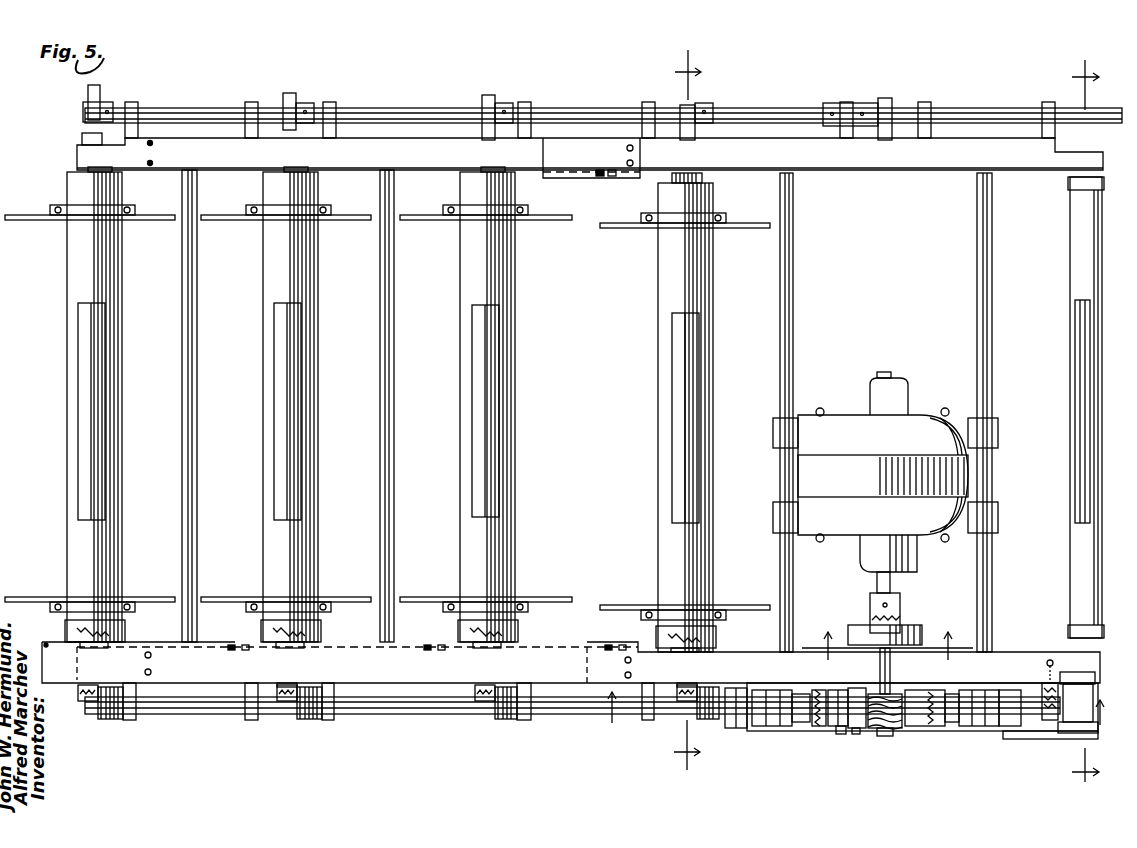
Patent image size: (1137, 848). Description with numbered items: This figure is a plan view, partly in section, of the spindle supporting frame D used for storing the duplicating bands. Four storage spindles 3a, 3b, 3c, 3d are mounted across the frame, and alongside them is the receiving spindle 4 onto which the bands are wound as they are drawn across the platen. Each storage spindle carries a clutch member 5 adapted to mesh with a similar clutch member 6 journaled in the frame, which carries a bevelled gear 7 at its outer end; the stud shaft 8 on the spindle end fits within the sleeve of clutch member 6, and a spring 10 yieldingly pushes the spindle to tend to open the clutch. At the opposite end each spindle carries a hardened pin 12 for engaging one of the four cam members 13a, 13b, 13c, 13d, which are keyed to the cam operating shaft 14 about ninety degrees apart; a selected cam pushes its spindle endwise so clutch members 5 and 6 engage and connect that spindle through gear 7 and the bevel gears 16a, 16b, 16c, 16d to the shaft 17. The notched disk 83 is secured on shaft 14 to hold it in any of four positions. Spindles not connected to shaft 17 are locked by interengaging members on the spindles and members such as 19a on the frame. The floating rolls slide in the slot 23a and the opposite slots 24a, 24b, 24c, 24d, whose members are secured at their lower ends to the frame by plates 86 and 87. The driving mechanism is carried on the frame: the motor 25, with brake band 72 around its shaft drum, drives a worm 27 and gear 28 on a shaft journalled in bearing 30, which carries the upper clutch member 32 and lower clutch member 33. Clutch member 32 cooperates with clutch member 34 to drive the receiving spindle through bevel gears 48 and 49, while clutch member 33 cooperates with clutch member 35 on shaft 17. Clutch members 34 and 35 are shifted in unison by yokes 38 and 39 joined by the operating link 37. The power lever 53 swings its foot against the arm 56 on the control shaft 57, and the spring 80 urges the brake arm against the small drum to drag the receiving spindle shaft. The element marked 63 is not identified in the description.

The cam operating shaft 14 is at (192, 110).
The cam member 13a is at (682, 108).
The cam member 13b is at (488, 96).
The cam member 13c is at (290, 94).
The cam member 13d is at (96, 92).
The notched disk 83 is at (890, 100).
The hardened pin 12 is at (298, 141).
The spindle supporting frame D is at (412, 150).
The plate 86 is at (570, 176).
The slot 23a is at (606, 178).
The receiving spindle 4 is at (1070, 262).
The spindle 3a is at (620, 606).
The spindle 3b is at (412, 598).
The spindle 3c is at (216, 598).
The spindle 3d is at (122, 598).
The clutch member 5 is at (306, 622).
The clutch member 6 is at (292, 648).
The bevelled gear 7 is at (280, 672).
The stud shaft 8 is at (856, 716).
The spring 10 is at (889, 646).
The interengaging member 19a is at (702, 179).
The slot 24a is at (612, 638).
The slot 24b is at (440, 646).
The slot 24c is at (240, 646).
The slot 24d is at (45, 650).
The plate 87 is at (540, 660).
The shaft 17 is at (420, 716).
The bevel gear 16a is at (706, 721).
The bevel gear 16b is at (500, 721).
The bevel gear 16c is at (310, 721).
The bevel gear 16d is at (112, 721).
The motor 25 is at (838, 428).
The brake band 72 is at (862, 630).
The power lever 53 is at (926, 646).
The bearing 63 is at (738, 700).
The yoke 39 is at (758, 728).
The clutch member 35 is at (795, 728).
The operating link 37 is at (816, 700).
The clutch member 33 is at (838, 700).
The bearing 30 is at (858, 733).
The arm 56 is at (841, 735).
The worm 27 is at (898, 731).
The gear 28 is at (884, 737).
The clutch member 32 is at (940, 700).
The control shaft 57 is at (950, 734).
The clutch member 34 is at (986, 730).
The yoke 38 is at (1010, 740).
The spring 80 is at (1046, 665).
The bevel gear 49 is at (1077, 688).
The bevel gear 48 is at (1070, 735).